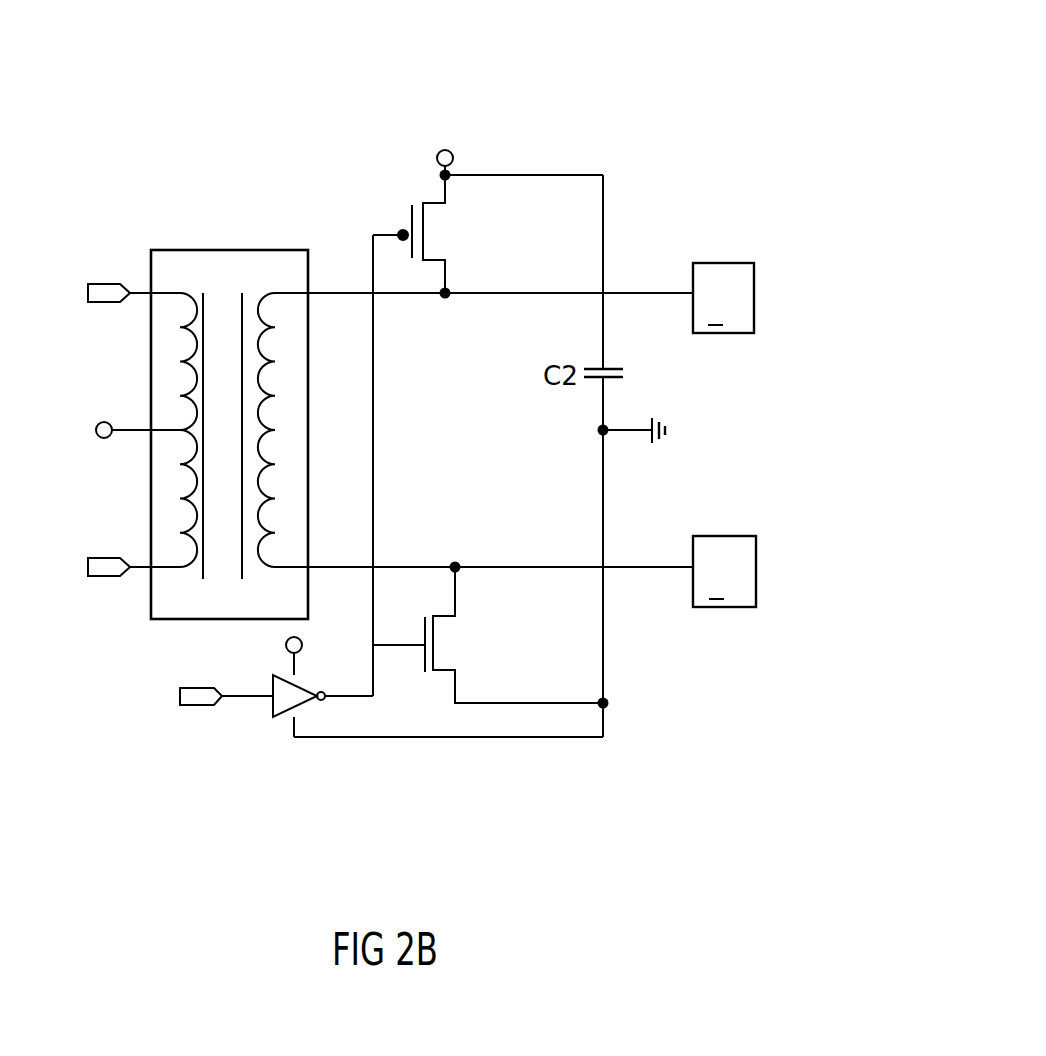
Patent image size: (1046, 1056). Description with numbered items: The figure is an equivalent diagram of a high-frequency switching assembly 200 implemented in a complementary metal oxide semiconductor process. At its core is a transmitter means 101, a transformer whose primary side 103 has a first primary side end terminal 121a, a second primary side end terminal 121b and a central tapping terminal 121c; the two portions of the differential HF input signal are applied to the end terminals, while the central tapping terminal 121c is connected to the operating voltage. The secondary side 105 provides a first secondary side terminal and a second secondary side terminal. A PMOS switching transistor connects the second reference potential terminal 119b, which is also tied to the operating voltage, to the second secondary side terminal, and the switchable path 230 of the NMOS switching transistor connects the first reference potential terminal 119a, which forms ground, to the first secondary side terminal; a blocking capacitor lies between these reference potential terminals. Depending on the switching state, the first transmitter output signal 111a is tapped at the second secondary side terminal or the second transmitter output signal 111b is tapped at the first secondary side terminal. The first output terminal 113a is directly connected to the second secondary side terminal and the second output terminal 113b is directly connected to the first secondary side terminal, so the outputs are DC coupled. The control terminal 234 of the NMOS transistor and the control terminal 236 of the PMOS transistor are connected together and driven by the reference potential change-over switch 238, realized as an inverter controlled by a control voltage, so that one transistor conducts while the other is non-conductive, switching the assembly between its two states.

The high-frequency switching assembly 200 is at (780, 72).
The transmitter means 101 is at (212, 250).
The primary side 103 is at (183, 497).
The secondary side 105 is at (279, 422).
The first primary side end terminal 121a is at (105, 577).
The second primary side end terminal 121b is at (105, 283).
The central tapping terminal 121c is at (97, 424).
The second reference potential terminal 119b is at (453, 156).
The first reference potential terminal 119a is at (606, 435).
The first transmitter output signal 111a is at (465, 296).
The second transmitter output signal 111b is at (520, 566).
The first output terminal 113a is at (740, 262).
The second output terminal 113b is at (736, 607).
The control terminal of the second switching transistor MP1 236 is at (399, 238).
The switchable path of the first switching transistor MN1 230 is at (437, 628).
The control terminal of the first switching transistor MN1 234 is at (425, 658).
The reference potential change-over switch 238 is at (290, 720).